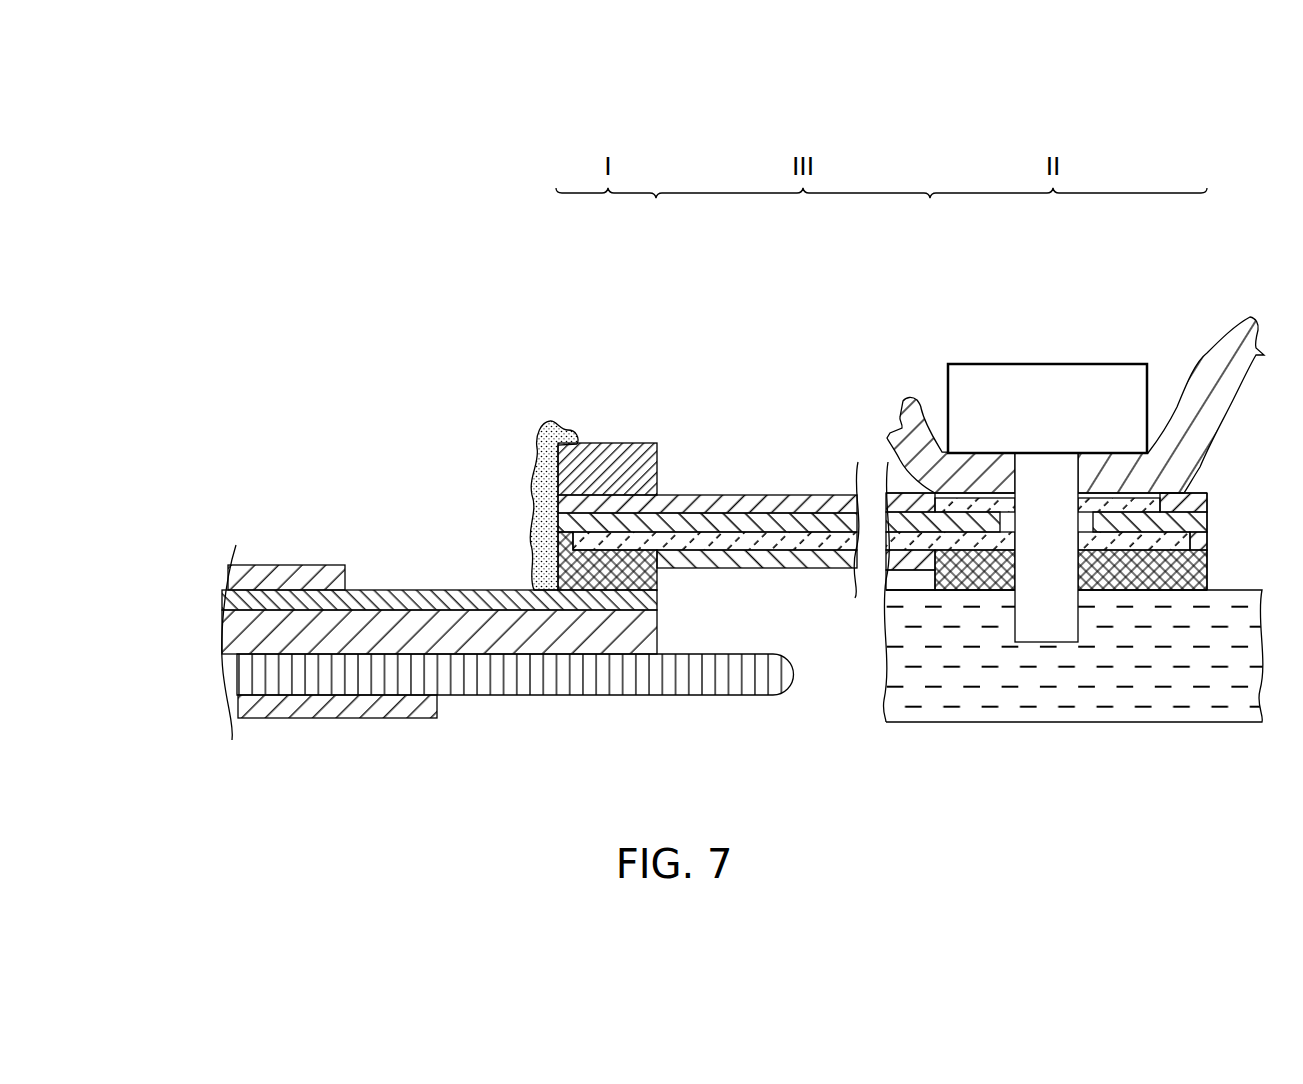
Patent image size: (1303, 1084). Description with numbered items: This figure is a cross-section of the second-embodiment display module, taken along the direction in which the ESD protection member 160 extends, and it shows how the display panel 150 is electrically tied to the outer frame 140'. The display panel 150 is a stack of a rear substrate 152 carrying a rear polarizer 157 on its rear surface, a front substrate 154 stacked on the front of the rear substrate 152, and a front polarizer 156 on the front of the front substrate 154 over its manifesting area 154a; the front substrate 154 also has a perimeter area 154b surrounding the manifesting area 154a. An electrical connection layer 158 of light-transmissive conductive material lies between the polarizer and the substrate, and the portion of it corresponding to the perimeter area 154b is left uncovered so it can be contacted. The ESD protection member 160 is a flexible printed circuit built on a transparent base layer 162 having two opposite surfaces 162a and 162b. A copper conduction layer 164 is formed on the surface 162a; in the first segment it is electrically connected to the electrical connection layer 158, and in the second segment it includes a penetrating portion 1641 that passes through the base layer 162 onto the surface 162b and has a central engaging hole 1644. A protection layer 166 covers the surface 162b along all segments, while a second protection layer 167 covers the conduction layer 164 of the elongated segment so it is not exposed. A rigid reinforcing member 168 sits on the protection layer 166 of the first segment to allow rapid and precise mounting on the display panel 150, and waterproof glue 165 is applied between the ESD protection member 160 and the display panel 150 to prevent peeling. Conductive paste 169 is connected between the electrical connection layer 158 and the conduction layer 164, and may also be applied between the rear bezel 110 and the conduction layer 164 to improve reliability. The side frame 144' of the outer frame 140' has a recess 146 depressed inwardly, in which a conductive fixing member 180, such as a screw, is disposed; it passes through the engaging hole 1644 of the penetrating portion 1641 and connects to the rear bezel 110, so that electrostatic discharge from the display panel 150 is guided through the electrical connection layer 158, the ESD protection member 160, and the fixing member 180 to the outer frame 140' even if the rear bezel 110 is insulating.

The rear bezel 110 is at (942, 694).
The outer frame 140' is at (1075, 367).
The side frame 144' is at (1171, 394).
The recess 146 is at (1122, 473).
The display panel 150 is at (108, 438).
The rear substrate 152 is at (280, 673).
The front substrate 154 is at (295, 630).
The manifesting area 154a is at (310, 638).
The perimeter area 154b is at (470, 640).
The front polarizer 156 is at (300, 566).
The rear polarizer 157 is at (267, 707).
The electrical connection layer 158 is at (312, 598).
The ESD protection member 160 is at (786, 493).
The base layer 162 is at (720, 525).
The surface 162a is at (1209, 547).
The surface 162b is at (1209, 497).
The conduction layer 164 is at (720, 545).
The penetrating portion 1641 is at (1113, 582).
The engaging hole 1644 is at (1040, 528).
The waterproof glue 165 is at (535, 445).
The protection layer 166 is at (778, 505).
The protection layer 167 is at (800, 560).
The reinforcing member 168 is at (620, 455).
The conductive paste 169 is at (555, 575).
The fixing member 180 is at (1050, 386).